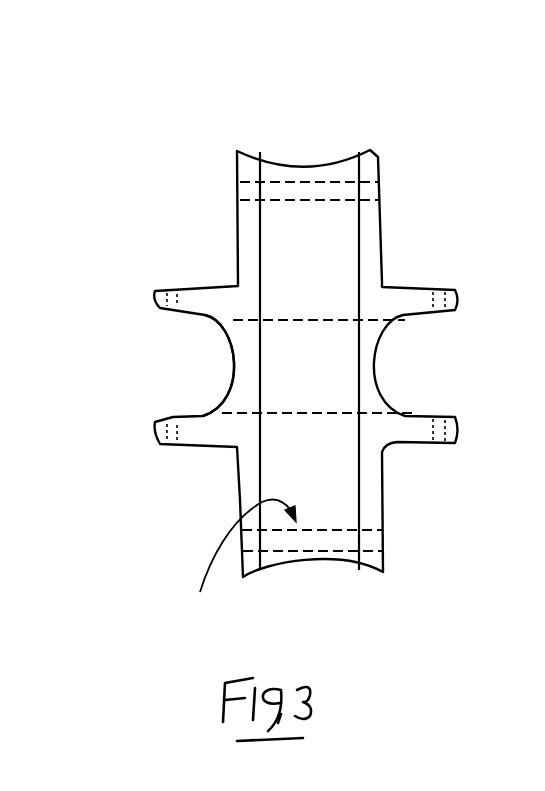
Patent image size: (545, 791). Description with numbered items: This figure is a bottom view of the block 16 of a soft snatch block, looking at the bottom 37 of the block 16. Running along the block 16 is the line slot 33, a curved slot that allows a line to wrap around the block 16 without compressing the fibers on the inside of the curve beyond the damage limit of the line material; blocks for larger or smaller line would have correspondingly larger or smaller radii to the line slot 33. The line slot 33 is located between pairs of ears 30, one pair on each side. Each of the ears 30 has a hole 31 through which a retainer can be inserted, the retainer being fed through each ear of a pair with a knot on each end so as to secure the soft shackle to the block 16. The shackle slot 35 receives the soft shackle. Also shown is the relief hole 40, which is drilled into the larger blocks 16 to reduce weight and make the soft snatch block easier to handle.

The block 16 is at (310, 358).
The ears 30 is at (456, 288).
The holes 31 is at (173, 298).
The line slot 33 is at (320, 383).
The shackle slot 35 is at (176, 360).
The bottom 37 is at (234, 570).
The relief hole 40 is at (383, 193).